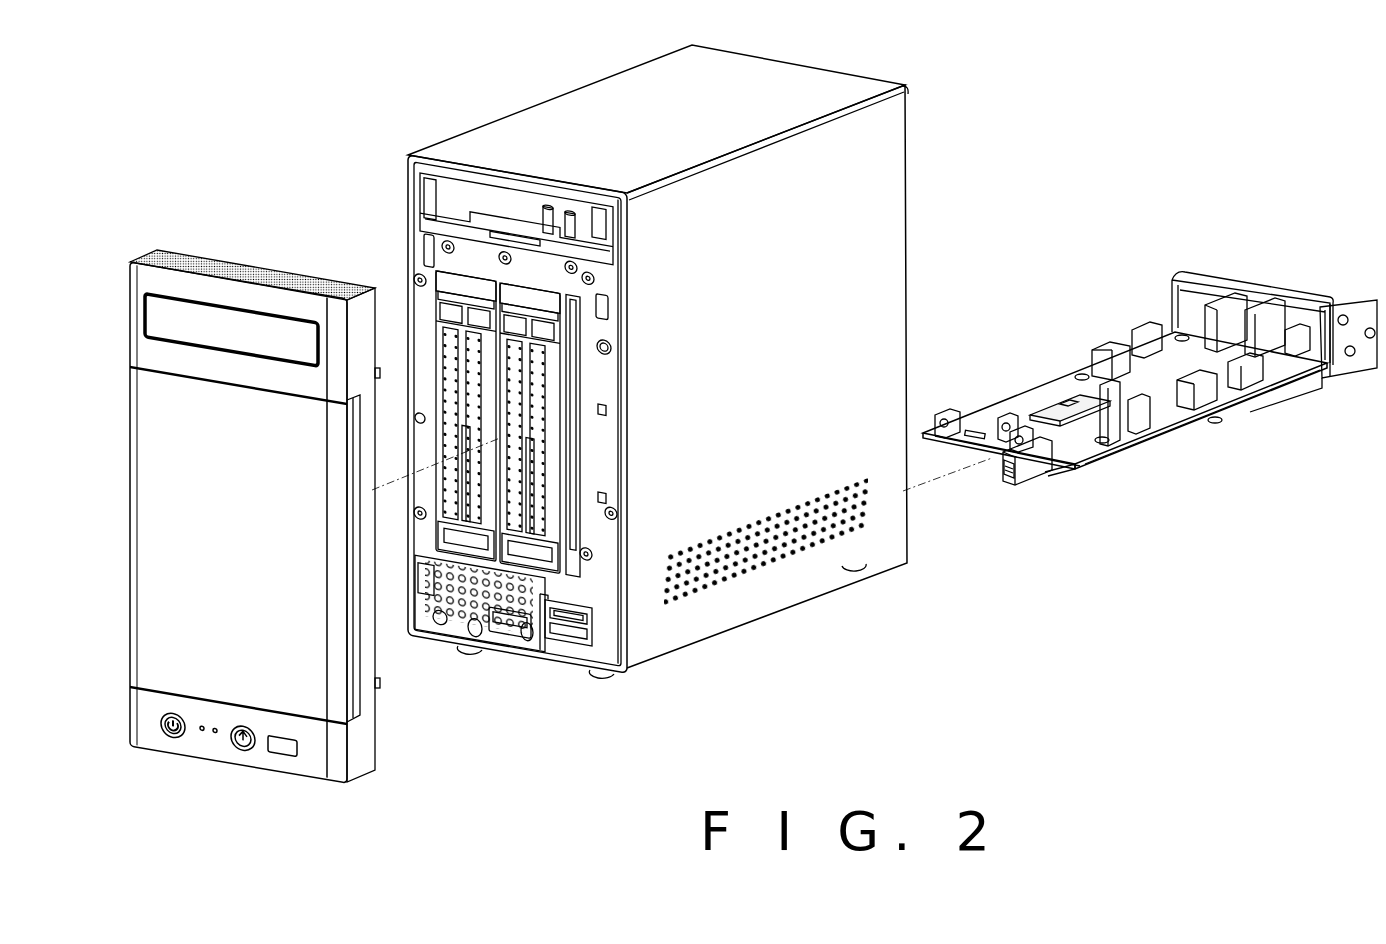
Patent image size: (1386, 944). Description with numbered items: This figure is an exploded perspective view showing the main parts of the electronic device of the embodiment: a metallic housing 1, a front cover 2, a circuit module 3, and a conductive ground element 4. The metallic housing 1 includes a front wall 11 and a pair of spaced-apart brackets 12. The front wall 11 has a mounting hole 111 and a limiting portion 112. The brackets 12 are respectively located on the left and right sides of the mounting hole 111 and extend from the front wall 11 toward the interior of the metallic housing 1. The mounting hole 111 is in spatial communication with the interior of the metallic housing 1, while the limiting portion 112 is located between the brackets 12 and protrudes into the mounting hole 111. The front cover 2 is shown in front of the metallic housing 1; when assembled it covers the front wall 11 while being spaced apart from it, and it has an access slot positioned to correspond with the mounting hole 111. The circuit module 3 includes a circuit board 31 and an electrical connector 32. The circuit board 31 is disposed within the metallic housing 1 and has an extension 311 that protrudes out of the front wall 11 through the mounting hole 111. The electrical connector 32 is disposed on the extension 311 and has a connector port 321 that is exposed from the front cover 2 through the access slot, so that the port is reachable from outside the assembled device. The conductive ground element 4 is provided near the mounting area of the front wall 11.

The metallic housing 1 is at (611, 87).
The front wall 11 is at (598, 456).
The mounting hole 111 is at (552, 638).
The limiting portion 112 is at (590, 612).
The brackets 12 is at (533, 640).
The front cover 2 is at (268, 271).
The circuit module 3 is at (1088, 275).
The circuit board 31 is at (1030, 400).
The extension 311 is at (1055, 473).
The electrical connector 32 is at (1035, 470).
The connector port 321 is at (999, 462).
The conductive ground element 4 is at (582, 640).